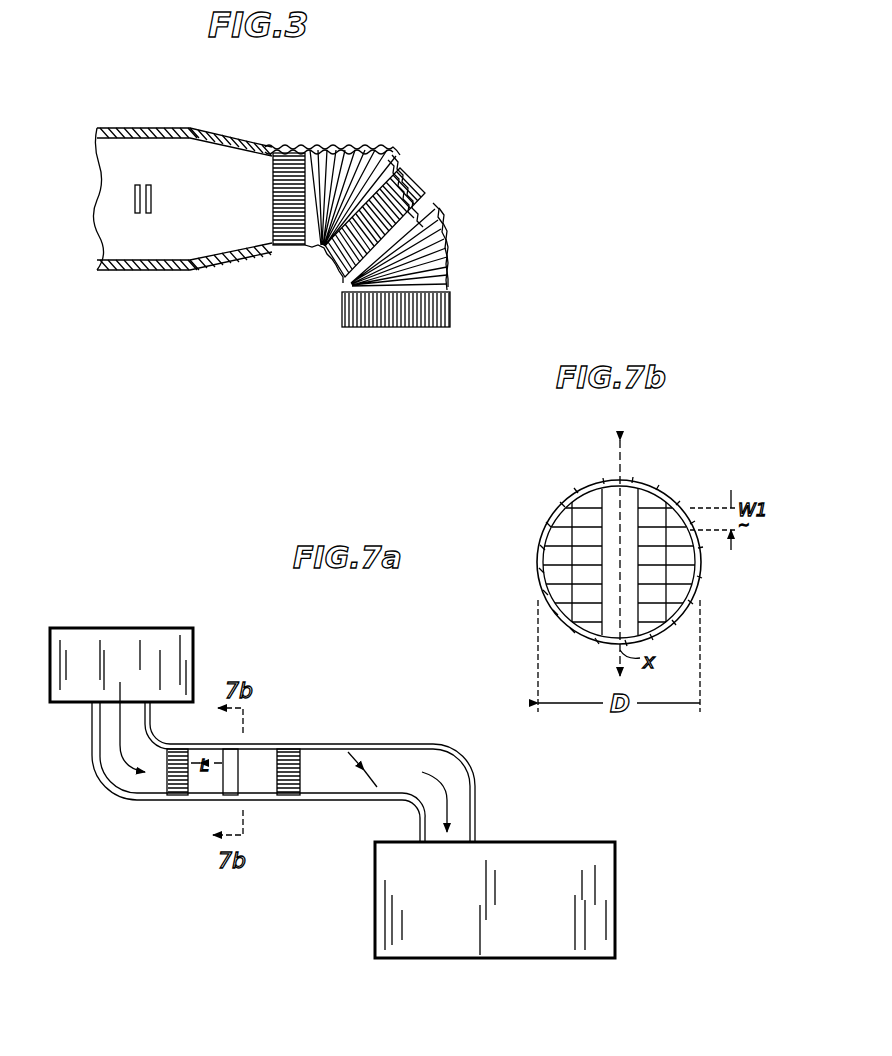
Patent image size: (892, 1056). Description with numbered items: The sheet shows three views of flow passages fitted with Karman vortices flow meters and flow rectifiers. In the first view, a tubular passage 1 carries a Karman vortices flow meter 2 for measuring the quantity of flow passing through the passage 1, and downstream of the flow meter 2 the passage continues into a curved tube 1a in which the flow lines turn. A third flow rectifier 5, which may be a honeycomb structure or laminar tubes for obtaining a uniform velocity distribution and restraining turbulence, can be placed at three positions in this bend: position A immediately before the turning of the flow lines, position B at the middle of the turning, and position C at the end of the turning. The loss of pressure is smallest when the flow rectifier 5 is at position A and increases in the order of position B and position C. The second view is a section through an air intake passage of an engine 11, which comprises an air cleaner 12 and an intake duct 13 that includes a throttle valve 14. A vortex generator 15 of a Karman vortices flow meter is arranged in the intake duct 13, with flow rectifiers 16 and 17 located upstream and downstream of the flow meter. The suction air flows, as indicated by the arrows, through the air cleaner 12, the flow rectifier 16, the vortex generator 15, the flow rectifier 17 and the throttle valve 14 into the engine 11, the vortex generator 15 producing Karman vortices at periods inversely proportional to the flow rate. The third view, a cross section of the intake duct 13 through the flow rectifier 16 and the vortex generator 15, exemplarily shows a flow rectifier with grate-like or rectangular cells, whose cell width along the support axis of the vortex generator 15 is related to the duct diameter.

In FIG. 3, the tubular passage 1 is at (178, 240).
In FIG. 3, the Karman vortices flow meter 2 is at (160, 186).
In FIG. 3, the third flow rectifier 5 is at (367, 310).
In FIG. 3, the position A is at (293, 180).
In FIG. 3, the position B is at (411, 195).
In FIG. 3, the position C is at (425, 310).
In FIG. 3, the curved tube 1a is at (389, 157).
In FIG. 7a, the engine 11 is at (465, 958).
In FIG. 7a, the air cleaner 12 is at (193, 652).
In FIG. 7a, the intake duct 13 is at (340, 743).
In FIG. 7b, the intake duct 13 is at (570, 499).
In FIG. 7a, the throttle valve 14 is at (371, 783).
In FIG. 7a, the vortex generator 15 is at (222, 780).
In FIG. 7b, the vortex generator 15 is at (625, 505).
In FIG. 7a, the flow rectifier 16 is at (182, 785).
In FIG. 7b, the flow rectifier 16 is at (557, 548).
In FIG. 7a, the flow rectifier 17 is at (287, 784).